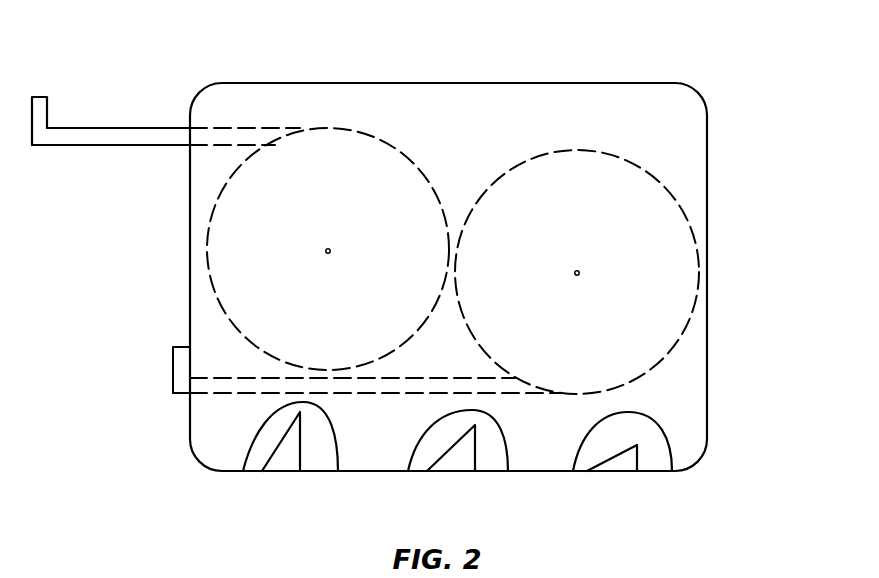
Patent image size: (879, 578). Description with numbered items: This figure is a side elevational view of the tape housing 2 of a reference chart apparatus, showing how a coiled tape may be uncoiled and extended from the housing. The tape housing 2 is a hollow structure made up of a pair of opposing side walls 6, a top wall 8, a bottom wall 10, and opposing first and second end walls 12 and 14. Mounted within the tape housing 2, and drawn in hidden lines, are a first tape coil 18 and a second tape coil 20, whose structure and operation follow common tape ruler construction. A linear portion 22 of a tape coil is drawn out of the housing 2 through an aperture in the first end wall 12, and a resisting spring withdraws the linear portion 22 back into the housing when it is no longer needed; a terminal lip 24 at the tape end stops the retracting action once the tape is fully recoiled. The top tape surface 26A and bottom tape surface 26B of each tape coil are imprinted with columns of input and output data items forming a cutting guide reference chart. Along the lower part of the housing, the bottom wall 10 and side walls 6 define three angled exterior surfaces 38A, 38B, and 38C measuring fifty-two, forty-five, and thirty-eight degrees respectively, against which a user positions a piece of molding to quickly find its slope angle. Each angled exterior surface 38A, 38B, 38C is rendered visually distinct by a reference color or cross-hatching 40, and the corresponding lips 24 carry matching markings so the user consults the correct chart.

The tape housing 2 is at (725, 61).
The side walls 6 is at (680, 126).
The top wall 8 is at (520, 83).
The bottom wall 10 is at (547, 472).
The first end wall 12 is at (188, 177).
The second end wall 14 is at (707, 172).
The first tape coil 18 is at (233, 273).
The second tape coil 20 is at (673, 282).
The linear portion 22 is at (158, 138).
The terminal lip 24 is at (43, 98).
The top tape surface 26A is at (115, 128).
The bottom tape surface 26B is at (77, 147).
The angled exterior surface 38A is at (280, 467).
The angled exterior surface 38B is at (450, 469).
The angled exterior surface 38C is at (618, 474).
The cross-hatching 40 is at (313, 460).